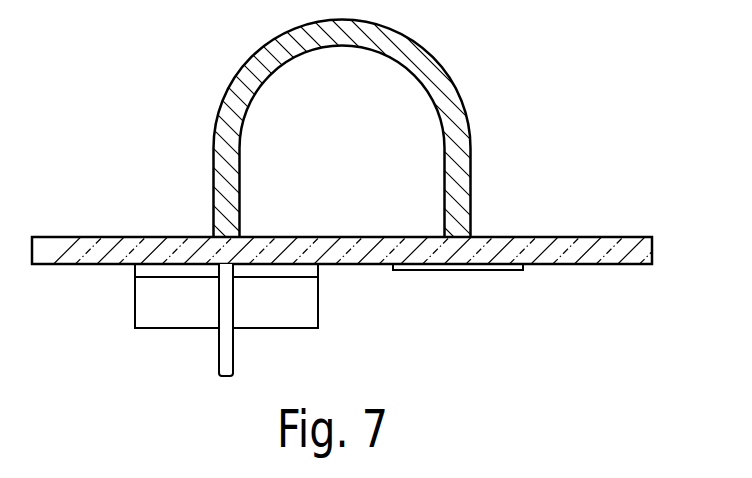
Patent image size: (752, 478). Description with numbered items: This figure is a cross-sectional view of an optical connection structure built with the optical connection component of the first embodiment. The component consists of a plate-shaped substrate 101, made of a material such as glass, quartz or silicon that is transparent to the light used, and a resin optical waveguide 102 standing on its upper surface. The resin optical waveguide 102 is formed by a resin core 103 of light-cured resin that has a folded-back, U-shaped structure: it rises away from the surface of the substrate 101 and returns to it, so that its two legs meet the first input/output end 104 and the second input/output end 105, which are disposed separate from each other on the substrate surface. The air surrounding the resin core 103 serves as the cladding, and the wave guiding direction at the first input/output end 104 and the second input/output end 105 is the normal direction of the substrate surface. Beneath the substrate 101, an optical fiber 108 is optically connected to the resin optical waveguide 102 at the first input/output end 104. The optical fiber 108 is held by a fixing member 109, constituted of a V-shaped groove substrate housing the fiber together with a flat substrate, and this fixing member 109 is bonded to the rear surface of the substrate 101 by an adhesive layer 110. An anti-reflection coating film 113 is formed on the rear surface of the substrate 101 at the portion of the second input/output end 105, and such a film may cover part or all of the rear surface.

The substrate 101 is at (652, 250).
The resin optical waveguide 102 is at (342, 120).
The resin core 103 is at (343, 46).
The first input/output end 104 is at (216, 236).
The second input/output end 105 is at (469, 236).
The optical fiber 108 is at (233, 347).
The fixing member 109 is at (254, 296).
The adhesive layer 110 is at (318, 268).
The anti-reflection coating film 113 is at (470, 270).